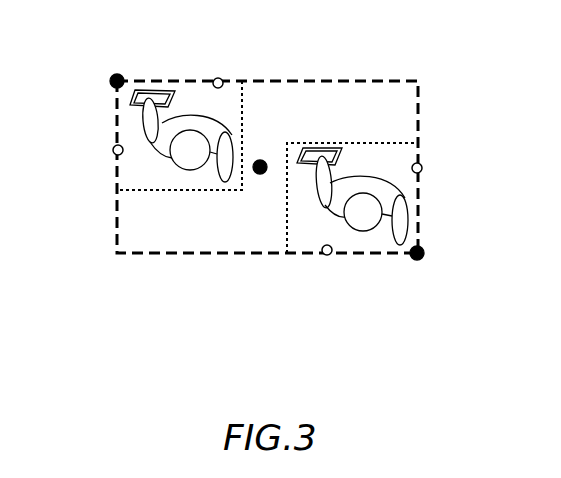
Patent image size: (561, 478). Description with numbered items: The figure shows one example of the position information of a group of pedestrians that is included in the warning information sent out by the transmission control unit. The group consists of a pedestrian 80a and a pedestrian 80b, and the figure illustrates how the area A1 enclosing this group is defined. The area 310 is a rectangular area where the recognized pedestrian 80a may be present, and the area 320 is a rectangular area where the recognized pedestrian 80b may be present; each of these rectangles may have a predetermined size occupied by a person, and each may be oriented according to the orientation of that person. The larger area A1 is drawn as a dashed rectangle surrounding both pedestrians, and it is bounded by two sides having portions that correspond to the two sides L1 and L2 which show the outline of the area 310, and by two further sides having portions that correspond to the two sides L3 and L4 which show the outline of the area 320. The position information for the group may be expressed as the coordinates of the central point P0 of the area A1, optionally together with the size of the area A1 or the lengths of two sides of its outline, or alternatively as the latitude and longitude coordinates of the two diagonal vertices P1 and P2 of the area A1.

The area A1 is at (422, 98).
The area 310 is at (352, 140).
The area 320 is at (145, 192).
The pedestrian 80a is at (365, 231).
The pedestrian 80b is at (199, 170).
The central point P0 is at (260, 175).
The diagonal vertex P1 is at (424, 253).
The diagonal vertex P2 is at (110, 79).
The side L1 is at (421, 165).
The side L2 is at (327, 257).
The side L3 is at (113, 146).
The side L4 is at (221, 78).